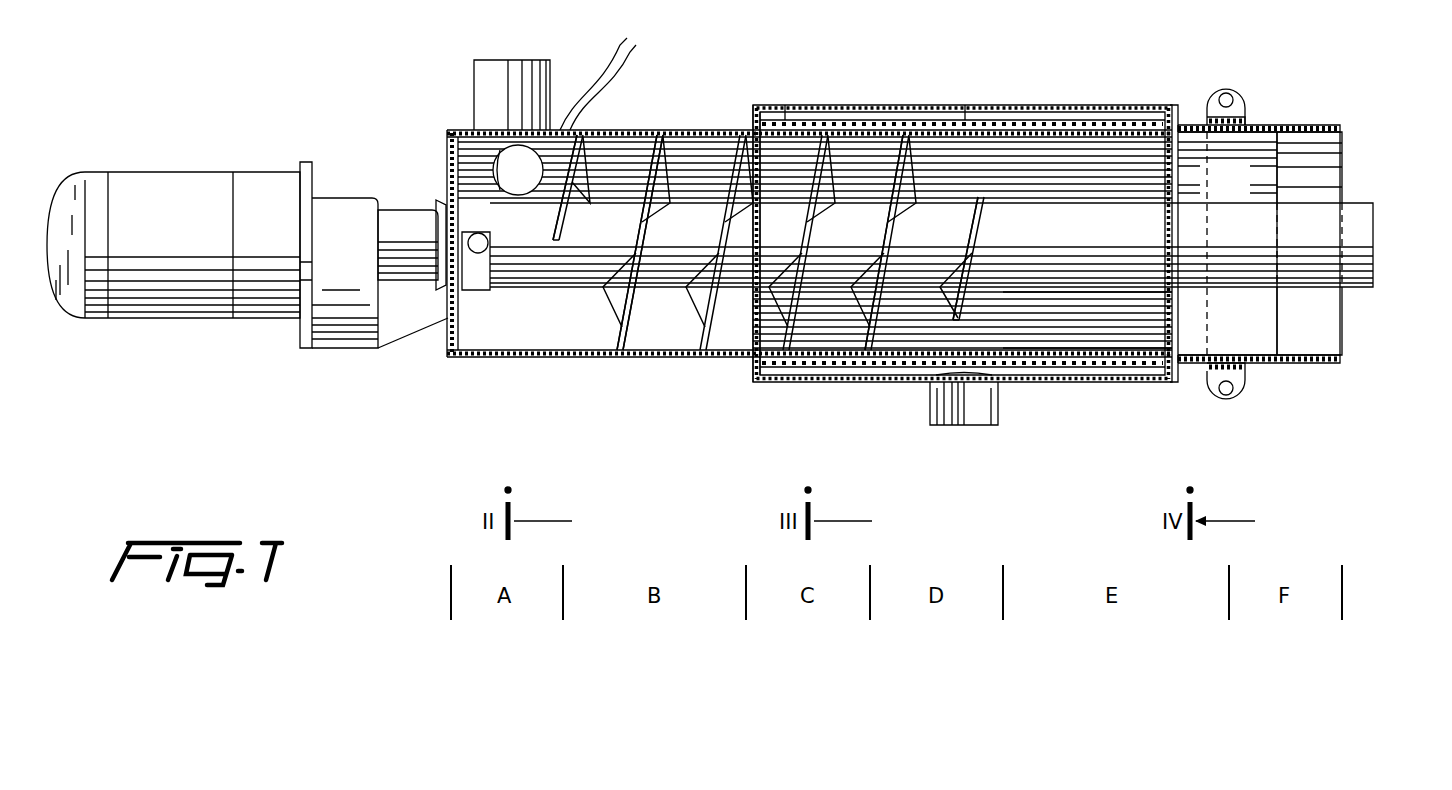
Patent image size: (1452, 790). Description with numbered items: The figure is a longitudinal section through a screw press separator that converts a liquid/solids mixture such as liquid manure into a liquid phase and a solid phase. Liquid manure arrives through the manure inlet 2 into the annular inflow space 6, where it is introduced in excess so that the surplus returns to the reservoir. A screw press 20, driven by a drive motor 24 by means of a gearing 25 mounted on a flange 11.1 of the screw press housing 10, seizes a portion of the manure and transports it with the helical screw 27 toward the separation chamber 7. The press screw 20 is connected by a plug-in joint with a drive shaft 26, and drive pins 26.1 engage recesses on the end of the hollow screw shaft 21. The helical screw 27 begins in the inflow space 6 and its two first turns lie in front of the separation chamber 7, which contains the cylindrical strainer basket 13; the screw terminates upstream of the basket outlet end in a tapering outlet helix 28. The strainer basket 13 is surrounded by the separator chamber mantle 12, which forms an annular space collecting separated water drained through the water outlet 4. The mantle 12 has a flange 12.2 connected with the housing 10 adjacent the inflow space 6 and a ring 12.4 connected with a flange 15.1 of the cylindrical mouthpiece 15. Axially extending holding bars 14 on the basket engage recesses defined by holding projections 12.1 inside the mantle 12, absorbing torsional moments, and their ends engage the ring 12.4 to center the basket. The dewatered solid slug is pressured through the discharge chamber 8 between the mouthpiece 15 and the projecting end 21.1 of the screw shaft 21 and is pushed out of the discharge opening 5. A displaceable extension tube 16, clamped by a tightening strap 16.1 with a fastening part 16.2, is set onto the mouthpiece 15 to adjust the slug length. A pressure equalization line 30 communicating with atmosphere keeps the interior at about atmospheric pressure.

The manure inlet 2 is at (522, 60).
The water outlet 4 is at (960, 425).
The discharge opening 5 is at (1350, 333).
The annular inflow space 6 is at (523, 235).
The separation chamber 7 is at (940, 195).
The discharge chamber 8 is at (1233, 232).
The screw press housing 10 is at (633, 157).
The flange 11.1 is at (452, 150).
The separator chamber mantle 12 is at (865, 105).
The holding projections 12.1 is at (790, 105).
The flange 12.2 is at (755, 115).
The ring 12.4 is at (1165, 105).
The cylindrical strainer basket 13 is at (1103, 330).
The holding bars 14 is at (1020, 118).
The cylindrical mouthpiece 15 is at (1247, 194).
The flange 15.1 is at (1183, 115).
The mouthpiece extension tube 16 is at (1342, 140).
The tightening strap 16.1 is at (1235, 118).
The lifting lug 16.2 is at (1229, 95).
The screw press 20 is at (607, 318).
The screw shaft 21 is at (614, 244).
The shaft end 21.1 is at (1375, 232).
The drive motor 24 is at (183, 172).
The gearing 25 is at (340, 212).
The drive shaft 26 is at (440, 268).
The drive pins 26.1 is at (480, 254).
The helical screw 27 is at (577, 177).
The tapering outlet helix 28 is at (950, 297).
The pressure equalization line 30 is at (638, 42).